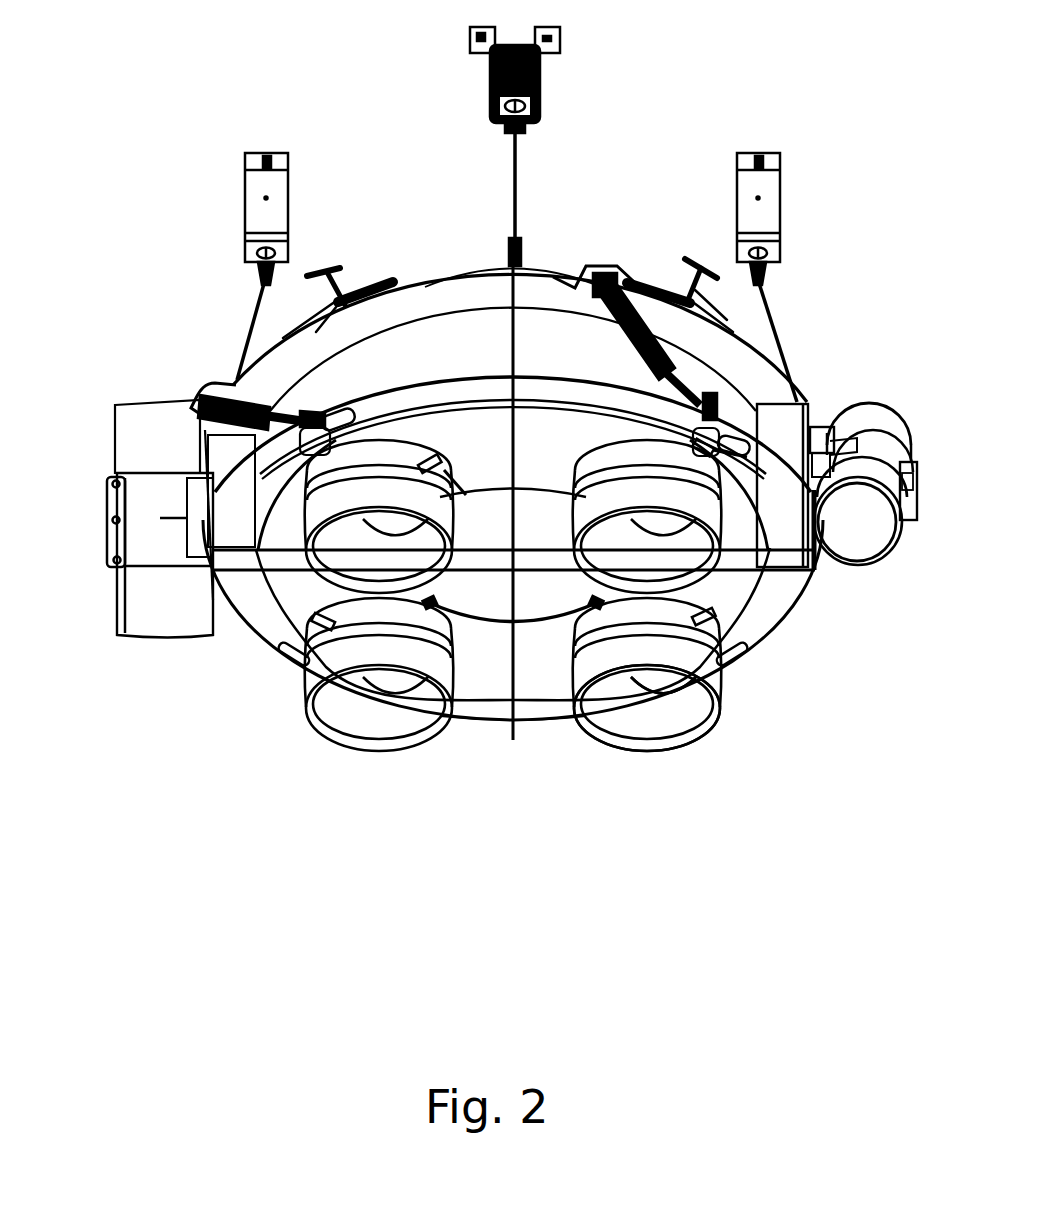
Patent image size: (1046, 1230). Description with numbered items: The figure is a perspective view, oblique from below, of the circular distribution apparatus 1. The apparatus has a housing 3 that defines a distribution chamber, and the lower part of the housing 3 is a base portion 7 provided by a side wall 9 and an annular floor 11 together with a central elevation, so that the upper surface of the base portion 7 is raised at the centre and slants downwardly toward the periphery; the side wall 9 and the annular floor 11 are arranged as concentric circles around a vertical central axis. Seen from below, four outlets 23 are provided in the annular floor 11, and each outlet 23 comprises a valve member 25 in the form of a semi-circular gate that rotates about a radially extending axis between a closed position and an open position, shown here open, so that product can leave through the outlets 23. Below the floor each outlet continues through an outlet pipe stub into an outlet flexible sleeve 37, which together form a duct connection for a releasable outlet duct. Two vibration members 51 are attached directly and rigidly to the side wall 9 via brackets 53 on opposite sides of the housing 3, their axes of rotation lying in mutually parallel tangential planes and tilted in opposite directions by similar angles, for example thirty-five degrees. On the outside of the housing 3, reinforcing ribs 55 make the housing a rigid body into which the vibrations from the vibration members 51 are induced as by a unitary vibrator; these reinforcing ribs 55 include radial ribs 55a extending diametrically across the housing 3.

The circular distribution apparatus 1 is at (897, 257).
The housing 3 is at (712, 384).
The base portion 7 is at (741, 605).
The side wall 9 is at (737, 405).
The annular floor 11 is at (748, 586).
The outlets 23 is at (342, 752).
The valve member 25 is at (657, 692).
The outlet flexible sleeve 37 is at (717, 720).
The vibration members 51 is at (898, 543).
The brackets 53 is at (820, 427).
The reinforcing ribs 55 is at (552, 296).
The radial ribs 55a is at (272, 562).